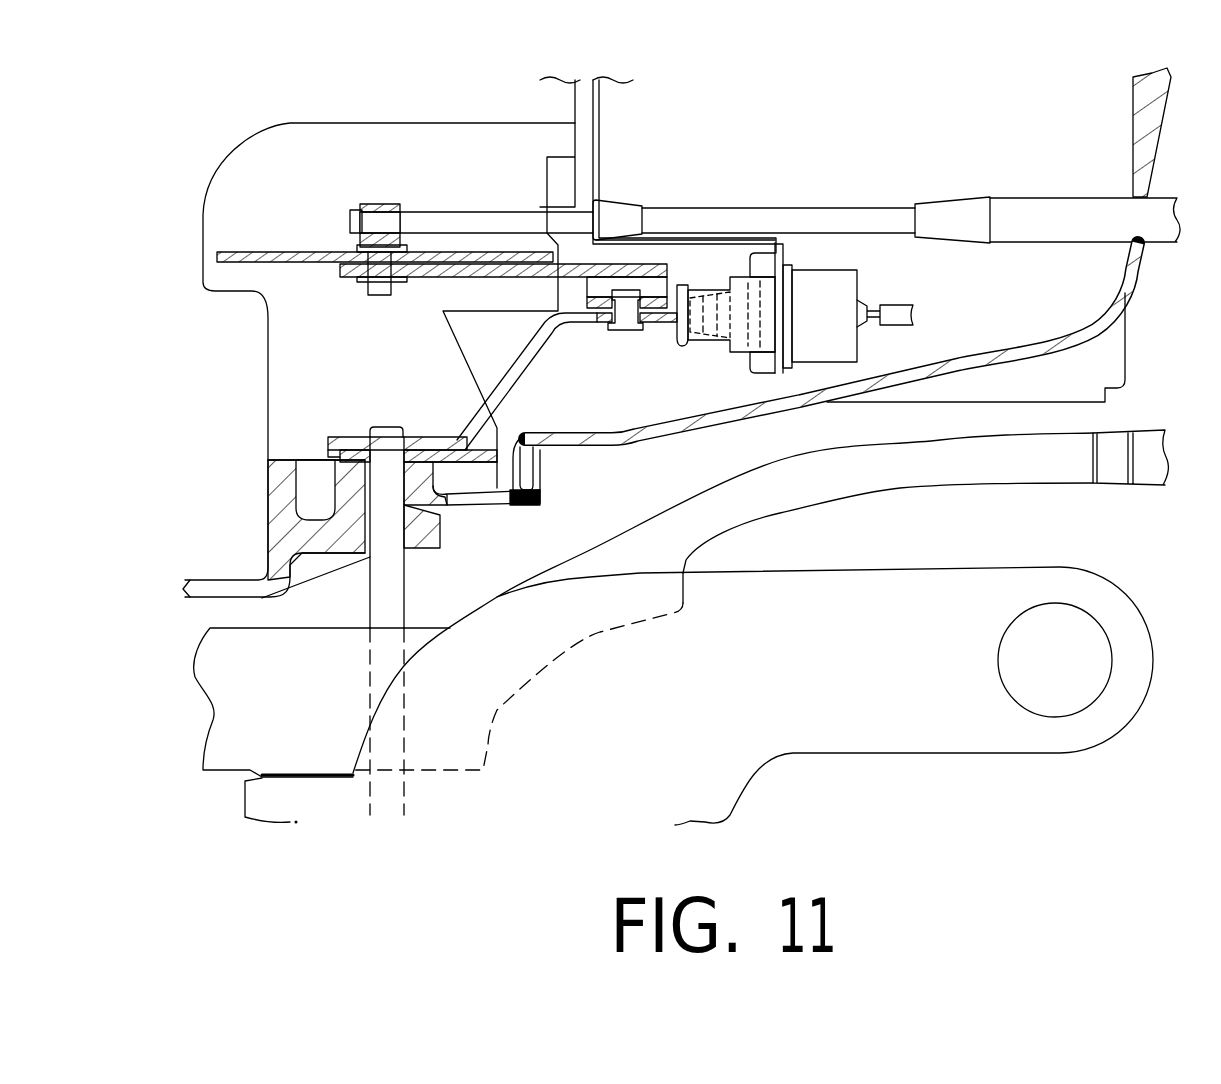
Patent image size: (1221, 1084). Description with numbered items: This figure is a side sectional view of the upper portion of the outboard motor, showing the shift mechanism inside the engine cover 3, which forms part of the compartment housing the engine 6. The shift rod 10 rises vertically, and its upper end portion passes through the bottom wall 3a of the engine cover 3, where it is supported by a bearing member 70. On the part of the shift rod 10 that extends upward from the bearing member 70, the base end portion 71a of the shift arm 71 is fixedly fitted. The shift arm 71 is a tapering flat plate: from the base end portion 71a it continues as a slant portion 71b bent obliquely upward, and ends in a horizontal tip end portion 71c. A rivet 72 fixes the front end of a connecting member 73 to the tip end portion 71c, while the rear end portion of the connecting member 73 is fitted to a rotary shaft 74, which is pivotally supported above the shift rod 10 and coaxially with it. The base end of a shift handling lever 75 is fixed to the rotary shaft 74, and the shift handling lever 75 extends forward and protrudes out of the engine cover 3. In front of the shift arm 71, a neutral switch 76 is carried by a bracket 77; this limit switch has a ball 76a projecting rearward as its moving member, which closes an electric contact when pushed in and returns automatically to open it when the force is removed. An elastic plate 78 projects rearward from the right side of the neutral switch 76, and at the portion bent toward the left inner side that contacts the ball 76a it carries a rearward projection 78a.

The engine cover 3 is at (1123, 290).
The bottom wall 3a is at (307, 553).
The engine 6 is at (577, 137).
The shift rod 10 is at (406, 584).
The bearing member 70 is at (328, 455).
The shift arm 71 is at (484, 383).
The base end portion 71a is at (337, 433).
The slant portion 71b is at (537, 388).
The tip end portion 71c is at (653, 330).
The rivet 72 is at (613, 330).
The connecting member 73 is at (480, 277).
The rotary shaft 74 is at (377, 297).
The shift handling lever 75 is at (870, 207).
The neutral switch 76 is at (817, 265).
The ball 76a is at (683, 345).
The bracket 77 is at (773, 236).
The elastic plate 78 is at (720, 300).
The projection 78a is at (690, 300).